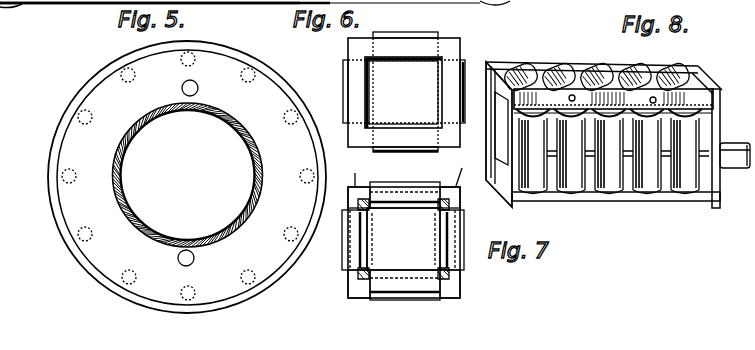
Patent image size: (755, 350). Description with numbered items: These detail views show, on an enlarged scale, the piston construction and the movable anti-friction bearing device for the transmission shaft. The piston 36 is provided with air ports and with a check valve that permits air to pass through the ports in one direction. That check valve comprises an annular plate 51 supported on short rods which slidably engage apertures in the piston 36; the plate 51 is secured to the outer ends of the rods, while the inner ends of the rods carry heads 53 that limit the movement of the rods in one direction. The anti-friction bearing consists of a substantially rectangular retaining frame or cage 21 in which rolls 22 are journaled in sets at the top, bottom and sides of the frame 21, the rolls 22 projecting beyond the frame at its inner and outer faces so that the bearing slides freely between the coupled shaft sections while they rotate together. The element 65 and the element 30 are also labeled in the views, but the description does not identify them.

In FIG. 5, the cover plate 65 is at (84, 5).
In FIG. 5, the bearing ring 51 is at (188, 158).
In FIG. 5, the pins 53 is at (199, 88).
In FIG. 5, the bolt holes 36 is at (76, 232).
In FIG. 6, the roller frame 21 is at (364, 142).
In FIG. 7, the roller frame 21 is at (453, 287).
In FIG. 8, the roller frame 21 is at (700, 82).
In FIG. 6, the rollers 22 is at (407, 122).
In FIG. 7, the rollers 22 is at (473, 220).
In FIG. 8, the rollers 22 is at (601, 74).
In FIG. 8, the shaft 30 is at (735, 175).